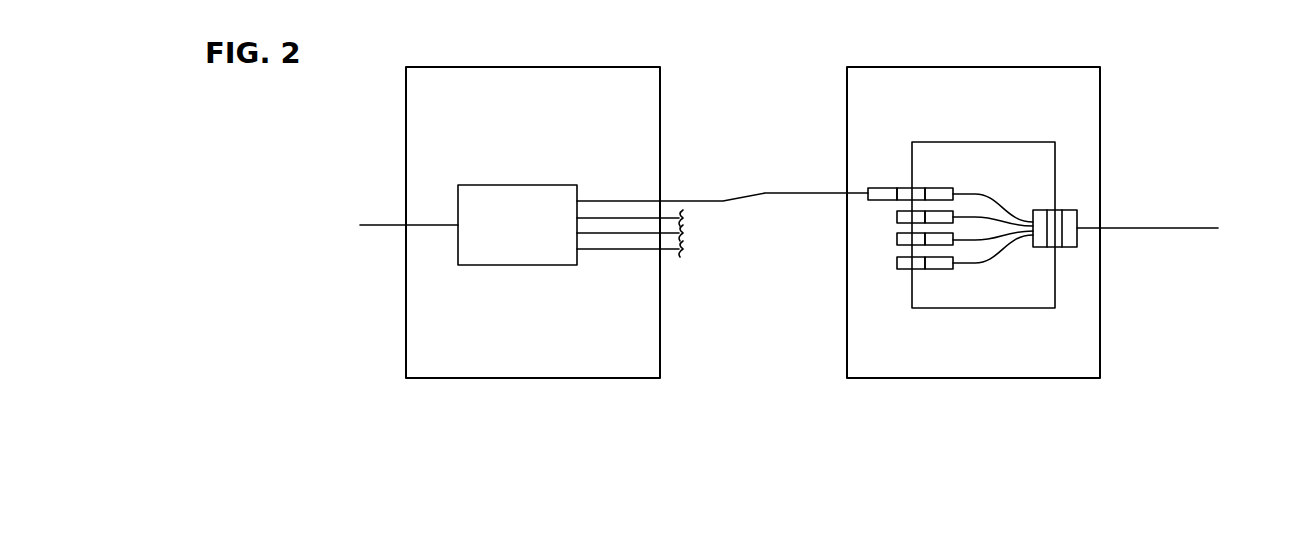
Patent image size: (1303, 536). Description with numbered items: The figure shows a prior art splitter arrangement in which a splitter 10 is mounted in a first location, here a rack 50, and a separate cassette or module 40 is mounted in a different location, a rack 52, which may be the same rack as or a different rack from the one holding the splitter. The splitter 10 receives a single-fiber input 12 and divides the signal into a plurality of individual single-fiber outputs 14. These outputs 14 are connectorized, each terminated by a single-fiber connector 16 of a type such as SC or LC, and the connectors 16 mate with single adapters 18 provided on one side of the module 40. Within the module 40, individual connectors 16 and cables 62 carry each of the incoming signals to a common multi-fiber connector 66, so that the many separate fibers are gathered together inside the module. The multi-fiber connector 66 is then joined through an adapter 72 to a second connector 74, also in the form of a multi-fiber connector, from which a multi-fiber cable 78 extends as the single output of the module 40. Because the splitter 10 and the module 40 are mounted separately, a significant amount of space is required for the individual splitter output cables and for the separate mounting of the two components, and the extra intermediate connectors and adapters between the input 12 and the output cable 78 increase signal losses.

The splitter 10 is at (518, 184).
The input 12 is at (382, 224).
The outputs 14 is at (605, 200).
The connectors 16 is at (880, 187).
The adapters 18 is at (918, 187).
The module 40 is at (960, 141).
The rack 50 is at (535, 66).
The rack 52 is at (975, 66).
The cables 62 is at (990, 198).
The multi-fiber connector 66 is at (1037, 212).
The adapter 72 is at (1050, 216).
The second connector 74 is at (1070, 248).
The multi-fiber cable 78 is at (1152, 227).